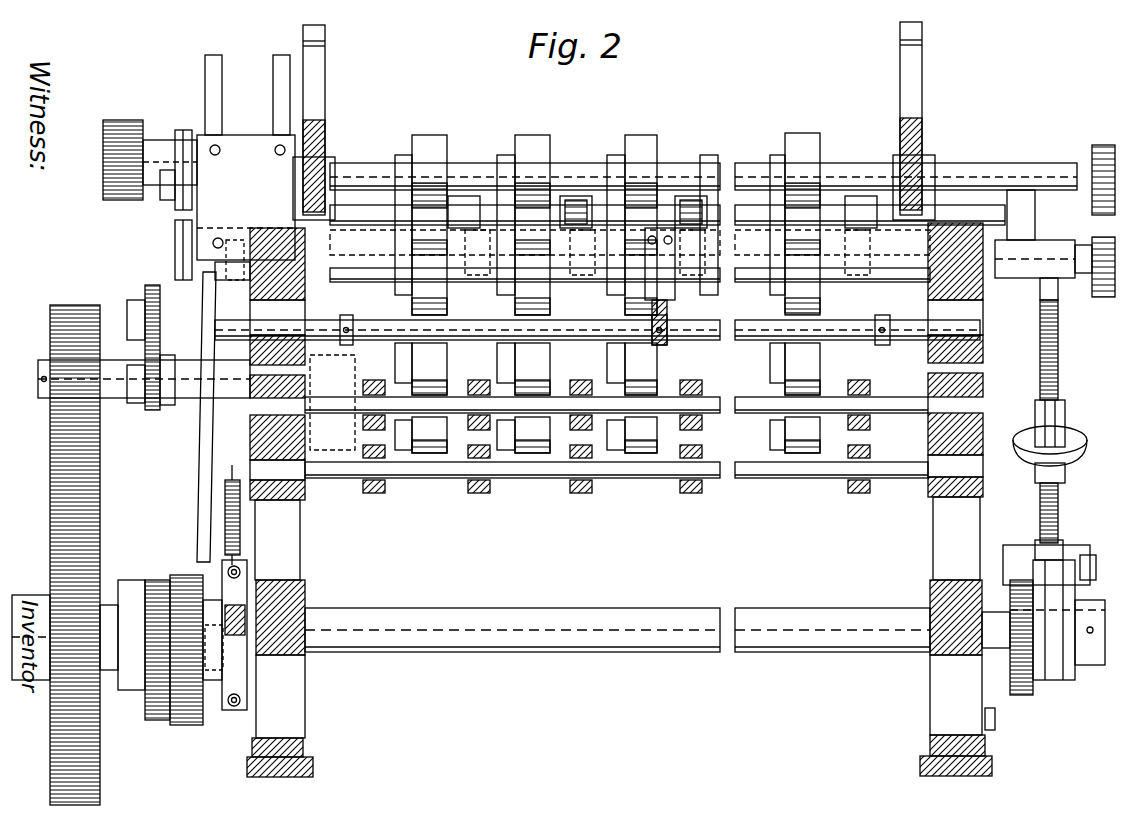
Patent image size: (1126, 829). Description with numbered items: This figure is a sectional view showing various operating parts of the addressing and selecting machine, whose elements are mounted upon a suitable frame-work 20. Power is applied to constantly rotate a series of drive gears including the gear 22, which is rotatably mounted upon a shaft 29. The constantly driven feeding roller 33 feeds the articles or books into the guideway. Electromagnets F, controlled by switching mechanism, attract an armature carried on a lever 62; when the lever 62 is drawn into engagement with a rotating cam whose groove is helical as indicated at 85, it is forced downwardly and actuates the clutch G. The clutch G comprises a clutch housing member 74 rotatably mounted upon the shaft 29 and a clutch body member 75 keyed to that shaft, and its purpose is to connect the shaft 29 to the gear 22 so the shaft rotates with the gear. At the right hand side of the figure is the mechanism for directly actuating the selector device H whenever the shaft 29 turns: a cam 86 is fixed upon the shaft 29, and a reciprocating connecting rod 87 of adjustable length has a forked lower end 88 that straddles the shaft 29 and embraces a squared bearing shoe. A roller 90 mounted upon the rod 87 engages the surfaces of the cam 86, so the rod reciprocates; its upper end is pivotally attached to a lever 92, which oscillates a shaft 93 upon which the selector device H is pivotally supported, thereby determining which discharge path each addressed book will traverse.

The frame-work 20 is at (292, 553).
The drive gear 22 is at (70, 545).
The shaft 29 is at (437, 617).
The feeding roller 33 is at (530, 135).
The lever 62 is at (206, 466).
The clutch housing member 74 is at (182, 575).
The clutch body member 75 is at (152, 580).
The helical groove 85 is at (234, 262).
The cam 86 is at (1025, 697).
The reciprocating connecting rod 87 is at (1060, 525).
The forked lower end 88 is at (1080, 592).
The roller 90 is at (1022, 548).
The lever 92 is at (1020, 238).
The shaft 93 is at (975, 207).
The electromagnets F is at (322, 450).
The clutch mechanism G is at (197, 732).
The selector device H is at (690, 198).